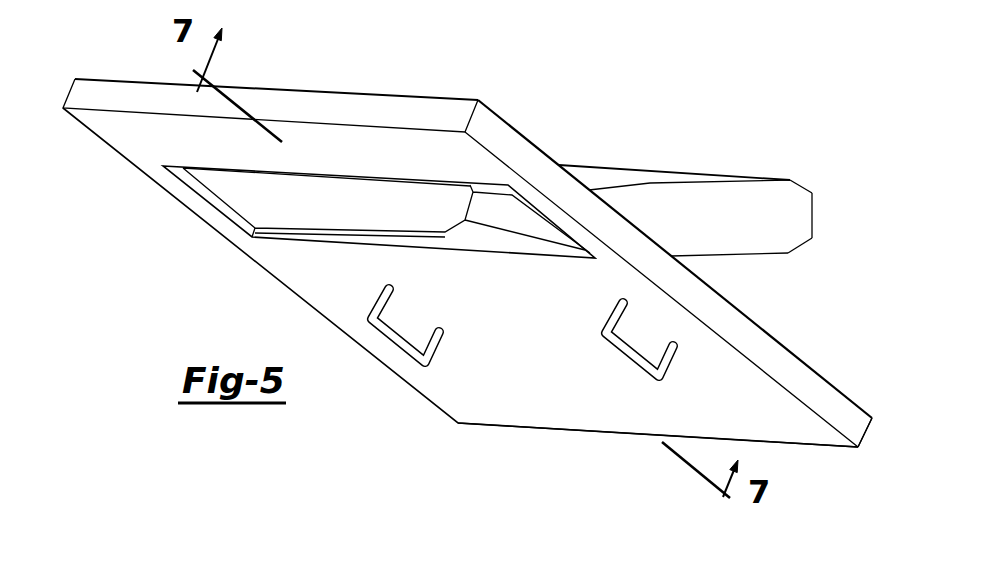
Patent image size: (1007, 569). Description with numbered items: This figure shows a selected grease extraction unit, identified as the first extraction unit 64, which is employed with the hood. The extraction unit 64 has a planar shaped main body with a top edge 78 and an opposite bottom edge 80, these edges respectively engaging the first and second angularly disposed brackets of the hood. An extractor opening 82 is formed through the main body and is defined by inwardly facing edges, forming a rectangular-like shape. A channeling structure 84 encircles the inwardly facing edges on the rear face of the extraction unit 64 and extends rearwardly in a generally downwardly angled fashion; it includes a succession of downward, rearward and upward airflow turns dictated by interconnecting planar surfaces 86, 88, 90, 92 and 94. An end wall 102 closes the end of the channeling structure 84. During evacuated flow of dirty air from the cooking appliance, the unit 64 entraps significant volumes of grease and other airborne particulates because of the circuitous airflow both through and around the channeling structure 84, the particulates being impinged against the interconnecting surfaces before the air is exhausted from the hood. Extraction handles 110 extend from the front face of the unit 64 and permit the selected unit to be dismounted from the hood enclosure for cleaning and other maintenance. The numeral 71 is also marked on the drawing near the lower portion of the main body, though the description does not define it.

The first extraction unit 64 is at (588, 121).
The bottom edge of plate 71 is at (568, 403).
The top edge 78 is at (372, 108).
The bottom edge 80 is at (878, 440).
The extractor opening 82 is at (252, 209).
The channeling structure 84 is at (725, 193).
The planar surface 86 is at (635, 173).
The planar surface 88 is at (795, 181).
The planar surface 90 is at (812, 216).
The planar surface 92 is at (800, 247).
The planar surface 94 is at (737, 257).
The end wall 102 is at (718, 218).
The extraction handles 110 is at (385, 295).